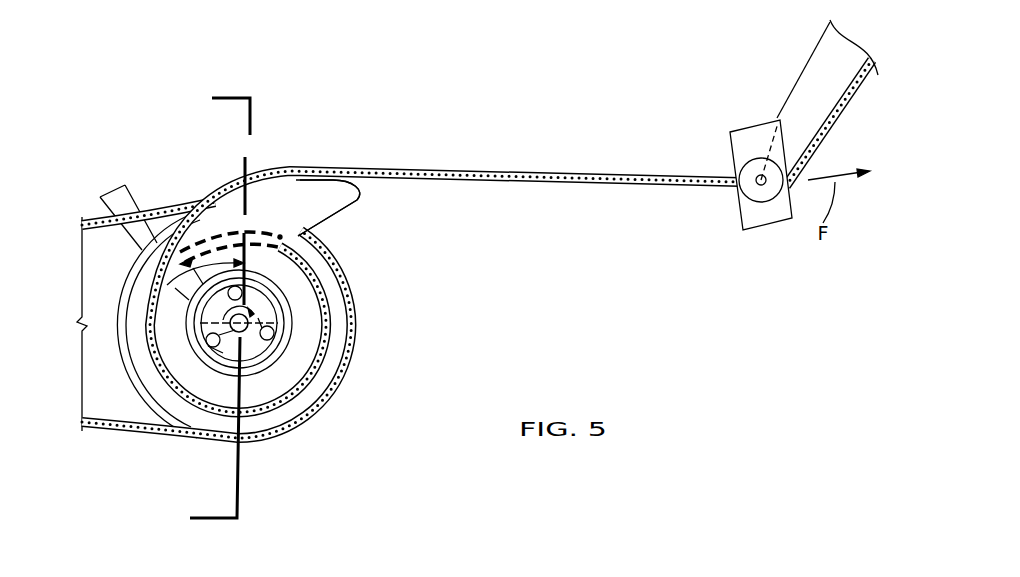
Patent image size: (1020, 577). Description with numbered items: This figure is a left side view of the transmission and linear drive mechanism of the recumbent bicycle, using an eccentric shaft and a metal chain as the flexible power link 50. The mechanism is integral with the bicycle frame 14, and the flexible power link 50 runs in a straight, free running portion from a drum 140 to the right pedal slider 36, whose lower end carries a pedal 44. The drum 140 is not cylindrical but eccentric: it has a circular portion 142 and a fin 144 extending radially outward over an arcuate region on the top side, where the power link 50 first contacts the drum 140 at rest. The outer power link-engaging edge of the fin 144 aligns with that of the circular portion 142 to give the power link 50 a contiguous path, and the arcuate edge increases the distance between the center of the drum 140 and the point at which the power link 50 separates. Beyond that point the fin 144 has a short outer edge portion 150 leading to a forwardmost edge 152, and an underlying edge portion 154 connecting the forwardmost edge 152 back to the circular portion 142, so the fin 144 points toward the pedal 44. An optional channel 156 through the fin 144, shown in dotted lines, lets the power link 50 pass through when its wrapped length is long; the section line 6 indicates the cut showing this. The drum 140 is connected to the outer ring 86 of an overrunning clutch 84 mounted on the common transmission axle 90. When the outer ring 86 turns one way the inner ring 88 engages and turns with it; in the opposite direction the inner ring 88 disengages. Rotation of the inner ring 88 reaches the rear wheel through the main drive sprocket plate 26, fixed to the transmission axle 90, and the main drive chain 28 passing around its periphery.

The section line 6- 6 is at (214, 292).
The bicycle frame 14 is at (117, 188).
The main drive sprocket plate 26 is at (118, 312).
The main drive chain 28 is at (90, 221).
The right pedal slider 36 is at (813, 97).
The pedal 44 is at (772, 213).
The flexible power link 50 is at (483, 168).
The overrunning clutch 84 is at (243, 333).
The outer ring 86 is at (210, 367).
The inner ring 88 is at (245, 352).
The transmission axle 90 is at (250, 316).
The drum 140 is at (262, 378).
The circular portion 142 is at (313, 200).
The fin 144 is at (265, 260).
The short outer edge portion 150 is at (348, 185).
The forwardmost edge 152 is at (360, 200).
The underlying edge portion 154 is at (333, 217).
The channel 156 is at (215, 238).